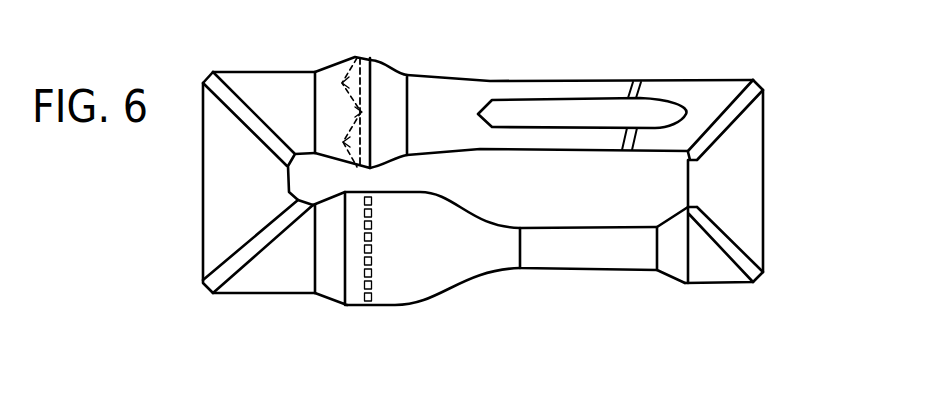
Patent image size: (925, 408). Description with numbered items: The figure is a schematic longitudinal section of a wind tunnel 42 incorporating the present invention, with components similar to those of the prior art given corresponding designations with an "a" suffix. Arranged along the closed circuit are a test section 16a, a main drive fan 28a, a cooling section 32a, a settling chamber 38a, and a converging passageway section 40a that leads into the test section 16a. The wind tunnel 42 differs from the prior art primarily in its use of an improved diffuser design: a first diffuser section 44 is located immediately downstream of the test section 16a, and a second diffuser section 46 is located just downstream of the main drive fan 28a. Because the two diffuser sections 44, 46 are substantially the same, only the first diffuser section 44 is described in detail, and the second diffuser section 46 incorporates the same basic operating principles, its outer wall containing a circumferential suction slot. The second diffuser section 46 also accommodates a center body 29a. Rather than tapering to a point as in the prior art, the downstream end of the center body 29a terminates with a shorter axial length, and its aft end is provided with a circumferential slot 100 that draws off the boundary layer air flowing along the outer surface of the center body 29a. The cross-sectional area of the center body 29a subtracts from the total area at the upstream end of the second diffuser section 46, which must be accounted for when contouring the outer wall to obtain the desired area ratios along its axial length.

The wind tunnel 42 is at (776, 64).
The diffuser section 44 is at (673, 270).
The test section 16a is at (592, 280).
The converging passageway section 40a is at (462, 283).
The settling chamber 38a is at (350, 308).
The cooling section 32a is at (377, 70).
The second diffuser section 46 is at (473, 75).
The circumferential slot 100 is at (481, 110).
The center body 29a is at (578, 108).
The main drive fan 28a is at (636, 84).